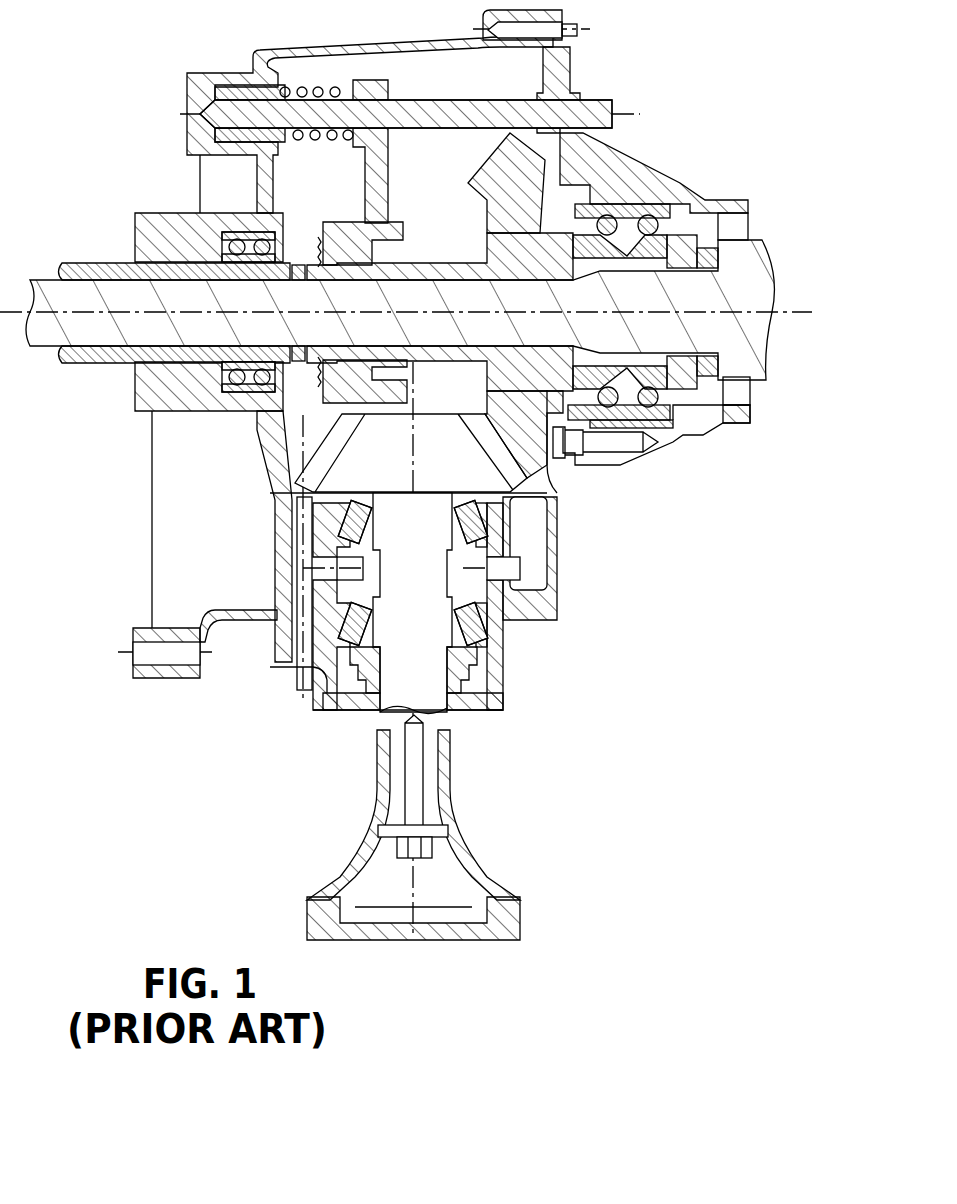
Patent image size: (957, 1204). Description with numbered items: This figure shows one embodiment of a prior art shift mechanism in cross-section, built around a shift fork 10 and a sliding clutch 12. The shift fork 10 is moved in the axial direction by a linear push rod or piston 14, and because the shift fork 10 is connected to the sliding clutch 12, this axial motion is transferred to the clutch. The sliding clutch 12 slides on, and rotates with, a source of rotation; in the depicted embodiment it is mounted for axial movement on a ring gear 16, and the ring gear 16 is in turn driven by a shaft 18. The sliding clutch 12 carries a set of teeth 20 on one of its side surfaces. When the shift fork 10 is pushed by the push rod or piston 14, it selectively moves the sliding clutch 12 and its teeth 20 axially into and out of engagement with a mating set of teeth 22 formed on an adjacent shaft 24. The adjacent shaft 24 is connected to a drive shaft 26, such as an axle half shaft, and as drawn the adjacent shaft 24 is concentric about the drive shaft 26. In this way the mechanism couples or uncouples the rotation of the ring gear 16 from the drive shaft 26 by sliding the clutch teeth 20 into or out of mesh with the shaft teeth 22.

The shift fork 10 is at (388, 175).
The sliding clutch 12 is at (373, 377).
The linear push rod or piston 14 is at (613, 104).
The ring gear 16 is at (508, 152).
The shaft 18 is at (503, 247).
The set of teeth 20 is at (327, 243).
The set of teeth 22 is at (313, 243).
The adjacent shaft 24 is at (65, 263).
The drive shaft 26 is at (64, 364).